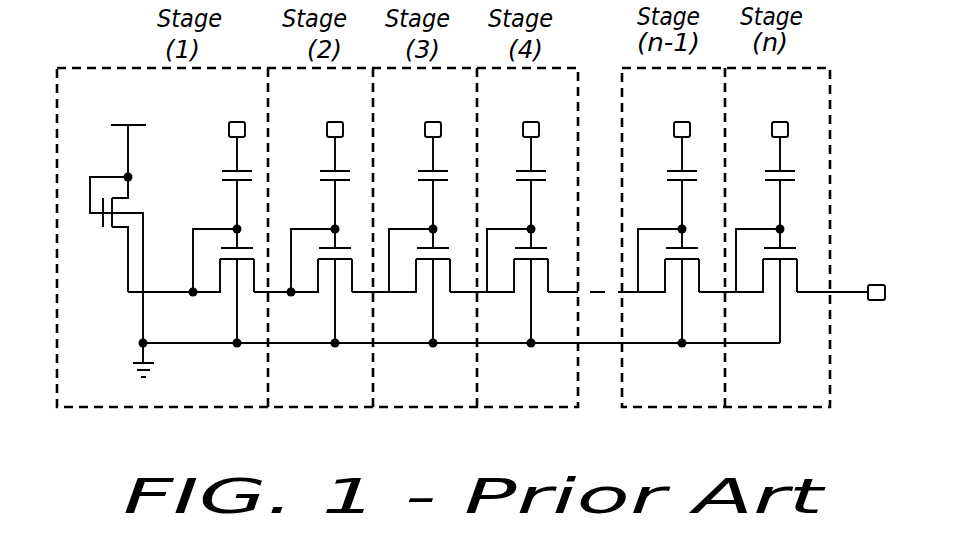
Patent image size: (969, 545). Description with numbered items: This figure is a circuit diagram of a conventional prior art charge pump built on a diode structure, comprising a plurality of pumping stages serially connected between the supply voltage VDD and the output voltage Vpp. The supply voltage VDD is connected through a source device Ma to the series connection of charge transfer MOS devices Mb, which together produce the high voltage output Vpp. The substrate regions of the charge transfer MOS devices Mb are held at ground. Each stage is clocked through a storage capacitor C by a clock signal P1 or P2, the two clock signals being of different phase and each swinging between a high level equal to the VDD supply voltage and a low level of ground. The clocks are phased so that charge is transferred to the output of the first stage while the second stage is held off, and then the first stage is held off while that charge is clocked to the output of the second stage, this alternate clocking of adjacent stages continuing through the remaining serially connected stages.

The supply voltage VDD is at (129, 136).
The source device Ma is at (189, 277).
The charge transfer MOS device Mb is at (491, 288).
The storage capacitor C is at (503, 209).
The clock signal P1 is at (457, 130).
The clock signal P2 is at (555, 130).
The output voltage Vpp is at (874, 270).